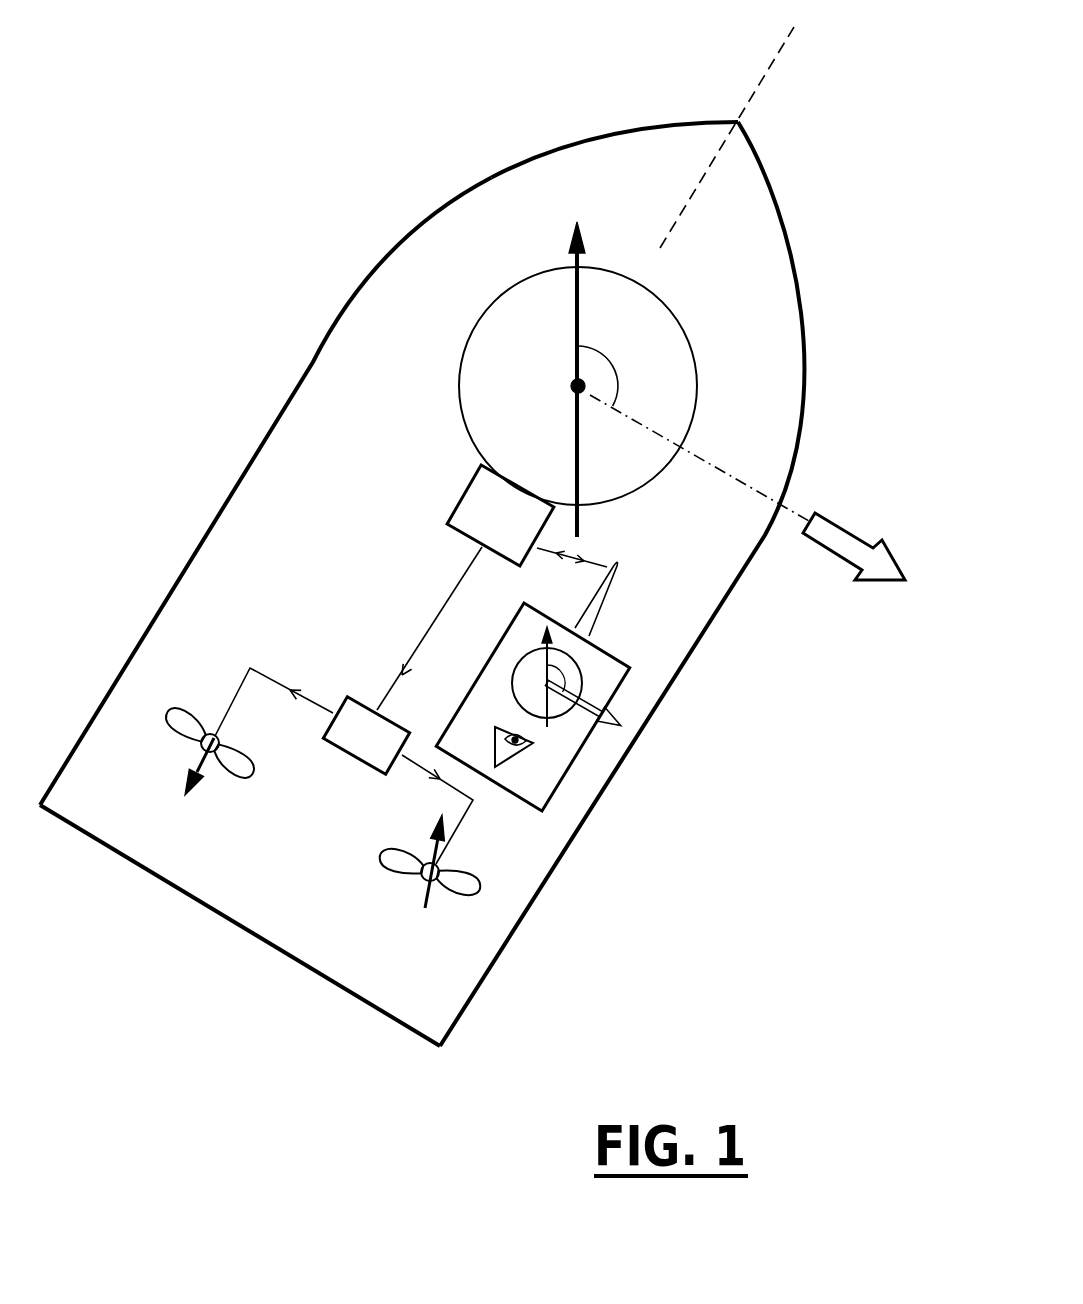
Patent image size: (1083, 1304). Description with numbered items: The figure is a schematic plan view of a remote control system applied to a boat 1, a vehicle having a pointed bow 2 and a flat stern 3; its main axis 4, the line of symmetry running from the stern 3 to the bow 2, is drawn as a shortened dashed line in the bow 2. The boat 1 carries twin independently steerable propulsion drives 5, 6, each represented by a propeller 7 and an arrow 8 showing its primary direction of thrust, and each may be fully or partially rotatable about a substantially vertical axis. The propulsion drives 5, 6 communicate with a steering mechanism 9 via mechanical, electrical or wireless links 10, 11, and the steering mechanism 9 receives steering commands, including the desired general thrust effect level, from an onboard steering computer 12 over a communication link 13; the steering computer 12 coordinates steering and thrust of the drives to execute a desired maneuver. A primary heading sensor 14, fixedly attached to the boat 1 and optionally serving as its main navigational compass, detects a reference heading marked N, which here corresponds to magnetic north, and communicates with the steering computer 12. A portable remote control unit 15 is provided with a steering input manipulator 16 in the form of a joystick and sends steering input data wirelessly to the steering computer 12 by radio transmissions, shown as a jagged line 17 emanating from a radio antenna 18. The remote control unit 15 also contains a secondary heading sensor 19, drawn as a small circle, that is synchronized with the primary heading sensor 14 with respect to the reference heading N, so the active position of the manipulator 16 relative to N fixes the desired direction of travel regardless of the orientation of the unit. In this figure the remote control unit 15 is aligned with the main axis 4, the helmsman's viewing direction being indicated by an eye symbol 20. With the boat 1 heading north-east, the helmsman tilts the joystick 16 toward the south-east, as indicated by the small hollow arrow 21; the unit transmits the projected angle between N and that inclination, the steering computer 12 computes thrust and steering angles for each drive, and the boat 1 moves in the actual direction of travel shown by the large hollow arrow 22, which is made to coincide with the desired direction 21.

The boat 1 is at (300, 357).
The bow 2 is at (693, 118).
The stern 3 is at (242, 930).
The main axis 4 is at (782, 55).
The propulsion drive 5 is at (178, 757).
The propulsion drive 6 is at (408, 886).
The propeller 7 is at (248, 763).
The arrow 8 is at (205, 763).
The steering mechanism 9 is at (366, 736).
The link 10 is at (233, 698).
The link 11 is at (455, 830).
The onboard steering computer 12 is at (500, 515).
The communication link 13 is at (418, 642).
The primary heading sensor 14 is at (463, 362).
The remote control unit 15 is at (603, 638).
The steering input manipulator 16 is at (566, 718).
The jagged line 17 is at (582, 553).
The radio antenna 18 is at (608, 586).
The secondary heading sensor 19 is at (512, 685).
The eye symbol 20 is at (516, 757).
The small hollow arrow 21 is at (632, 722).
The large hollow arrow 22 is at (838, 537).